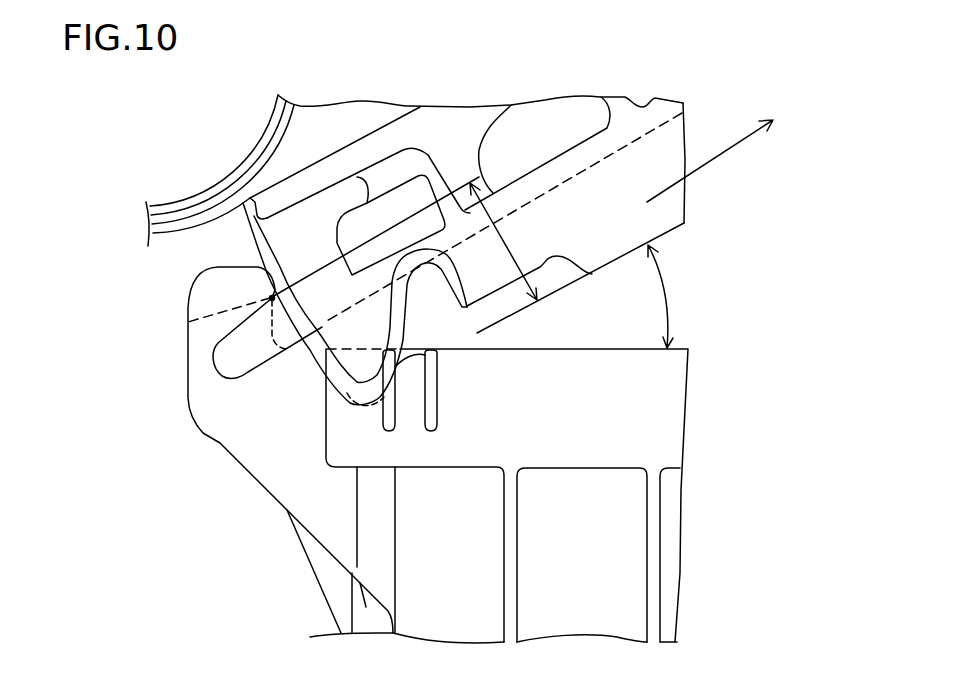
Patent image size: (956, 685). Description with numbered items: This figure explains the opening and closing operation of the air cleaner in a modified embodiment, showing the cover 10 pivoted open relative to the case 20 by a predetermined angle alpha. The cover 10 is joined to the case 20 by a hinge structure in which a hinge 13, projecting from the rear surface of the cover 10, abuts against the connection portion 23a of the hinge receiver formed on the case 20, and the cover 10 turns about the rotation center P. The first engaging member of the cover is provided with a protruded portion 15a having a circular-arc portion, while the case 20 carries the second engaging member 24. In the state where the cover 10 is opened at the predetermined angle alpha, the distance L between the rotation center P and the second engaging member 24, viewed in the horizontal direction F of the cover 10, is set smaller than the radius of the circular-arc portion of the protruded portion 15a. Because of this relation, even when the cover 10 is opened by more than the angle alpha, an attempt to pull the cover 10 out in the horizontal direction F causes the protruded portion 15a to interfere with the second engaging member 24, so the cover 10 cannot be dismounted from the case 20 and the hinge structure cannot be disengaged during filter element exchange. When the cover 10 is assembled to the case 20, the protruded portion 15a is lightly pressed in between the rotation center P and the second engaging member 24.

The cover 10 is at (650, 112).
The hinge 13 is at (230, 358).
The protruded portion 15a is at (477, 333).
The case 20 is at (681, 573).
The connection portion 23a is at (212, 302).
The second engaging member 24 is at (437, 409).
The rotation center P is at (271, 297).
The horizontal direction F is at (723, 152).
The distance L is at (503, 241).
The predetermined angle alpha is at (667, 293).